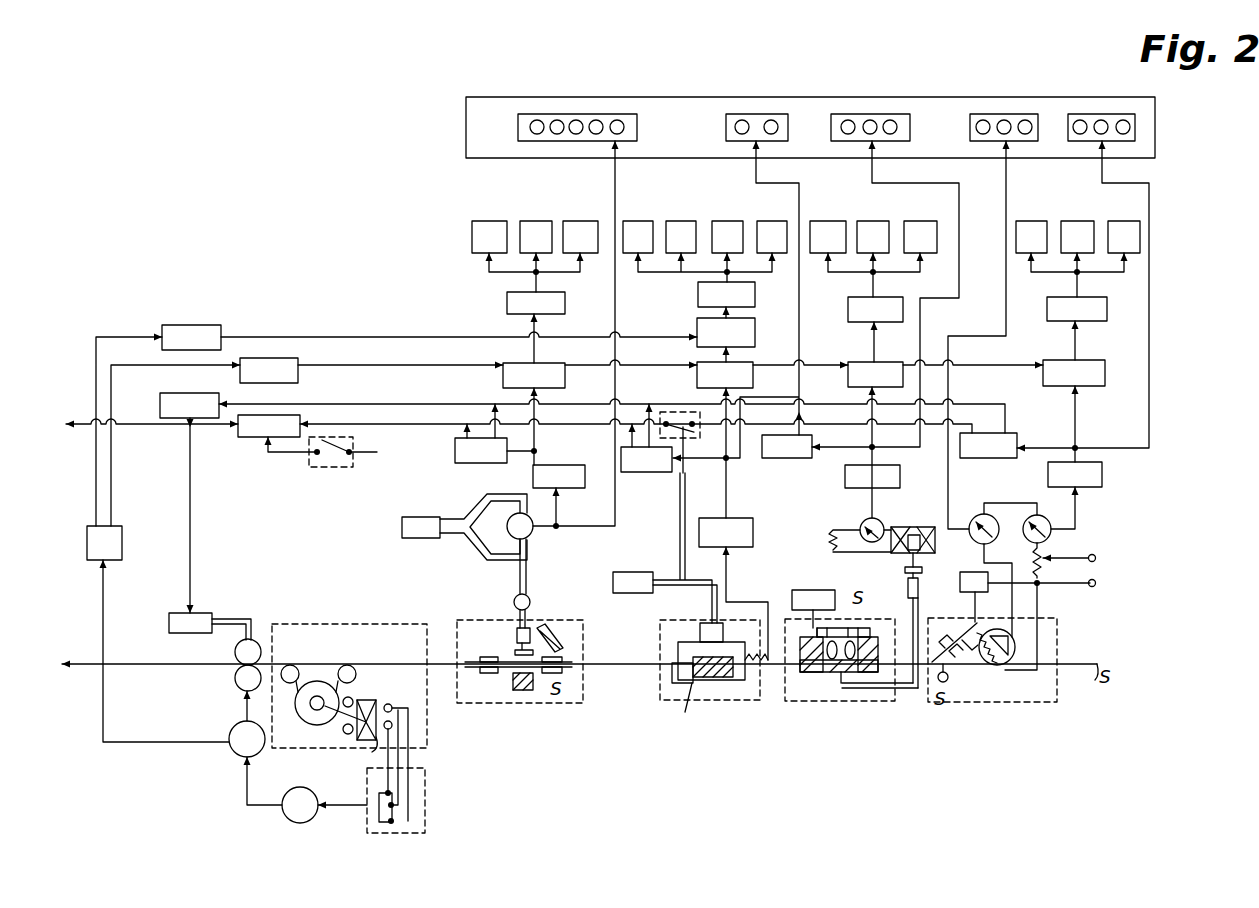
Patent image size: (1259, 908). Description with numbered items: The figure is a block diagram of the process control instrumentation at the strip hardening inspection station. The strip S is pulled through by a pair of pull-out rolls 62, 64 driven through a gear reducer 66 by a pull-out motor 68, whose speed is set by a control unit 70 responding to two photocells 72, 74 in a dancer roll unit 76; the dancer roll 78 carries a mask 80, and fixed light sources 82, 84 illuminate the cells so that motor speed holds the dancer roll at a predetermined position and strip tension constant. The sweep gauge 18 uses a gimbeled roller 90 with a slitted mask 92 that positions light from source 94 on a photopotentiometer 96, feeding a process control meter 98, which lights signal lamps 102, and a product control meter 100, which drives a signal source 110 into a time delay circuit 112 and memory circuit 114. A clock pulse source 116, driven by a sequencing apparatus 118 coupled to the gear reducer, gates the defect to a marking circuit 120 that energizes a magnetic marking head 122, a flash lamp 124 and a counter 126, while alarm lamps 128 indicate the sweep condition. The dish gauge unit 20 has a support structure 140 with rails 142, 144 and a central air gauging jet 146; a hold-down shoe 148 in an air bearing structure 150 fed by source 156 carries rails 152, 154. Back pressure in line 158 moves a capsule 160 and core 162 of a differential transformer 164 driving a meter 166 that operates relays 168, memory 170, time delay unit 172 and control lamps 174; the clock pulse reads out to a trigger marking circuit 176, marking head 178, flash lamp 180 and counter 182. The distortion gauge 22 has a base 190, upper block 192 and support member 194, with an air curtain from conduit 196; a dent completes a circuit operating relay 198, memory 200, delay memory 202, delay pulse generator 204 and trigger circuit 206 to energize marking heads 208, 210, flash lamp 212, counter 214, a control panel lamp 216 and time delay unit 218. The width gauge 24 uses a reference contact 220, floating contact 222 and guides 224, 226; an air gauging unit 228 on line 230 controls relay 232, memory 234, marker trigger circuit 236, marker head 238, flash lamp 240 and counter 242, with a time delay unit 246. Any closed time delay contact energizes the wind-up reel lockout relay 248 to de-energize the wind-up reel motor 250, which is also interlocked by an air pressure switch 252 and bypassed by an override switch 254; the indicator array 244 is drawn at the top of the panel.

The sweep gauge 18 is at (975, 706).
The dish gauge unit 20 is at (815, 702).
The distortion gauge 22 is at (700, 702).
The width gauge 24 is at (535, 702).
The pull-out roll 62 is at (235, 679).
The pull-out roll 64 is at (235, 654).
The gear reducer 66 is at (232, 748).
The pull-out motor 68 is at (306, 820).
The control unit 70 is at (425, 815).
The photocell 72 is at (391, 705).
The photocell 74 is at (374, 745).
The dancer roll unit 76 is at (384, 626).
The dancer roll 78 is at (314, 681).
The mask 80 is at (342, 722).
The light source 82 is at (352, 700).
The light source 84 is at (344, 734).
The gimbeled roller 90 is at (942, 640).
The slitted mask 92 is at (975, 664).
The light source 94 is at (945, 684).
The photopotentiometer 96 is at (1028, 665).
The process control meter 98 is at (978, 520).
The product control meter 100 is at (1045, 520).
The signal lamps 102 is at (1003, 114).
The signal source 110 is at (1102, 478).
The time delay circuit 112 is at (1017, 446).
The memory circuit 114 is at (1105, 378).
The clock pulse source 116 is at (292, 362).
The sequencing apparatus 118 is at (122, 534).
The marking circuit 120 is at (1107, 312).
The magnetic marking head 122 is at (1124, 221).
The flash lamp 124 is at (1077, 221).
The counter 126 is at (1031, 221).
The alarm lamps 128 is at (1100, 114).
The support structure 140 is at (802, 672).
The rail 142 is at (832, 660).
The rail 144 is at (852, 660).
The air gauging jet 146 is at (841, 690).
The hold-down shoe 148 is at (858, 630).
The air bearing structure 150 is at (798, 630).
The rail 152 is at (835, 628).
The rail 154 is at (860, 630).
The source 156 is at (822, 628).
The line 158 is at (918, 588).
The capsule 160 is at (905, 569).
The core 162 is at (914, 535).
The differential transformer 164 is at (900, 527).
The meter 166 is at (864, 522).
The relays 168 is at (900, 482).
The memory 170 is at (888, 365).
The time delay unit 172 is at (778, 458).
The control lamps 174 is at (866, 114).
The trigger marking circuit 176 is at (848, 308).
The magnetic marking head 178 is at (920, 221).
The flash lamp 180 is at (873, 221).
The counter 182 is at (828, 221).
The base 190 is at (672, 676).
The upper block 192 is at (678, 646).
The support member 194 is at (682, 707).
The conduit 196 is at (712, 608).
The relay 198 is at (753, 530).
The memory 200 is at (753, 378).
The delay memory 202 is at (755, 338).
The delay pulse generator 204 is at (218, 325).
The trigger circuit 206 is at (755, 302).
The marking head 208 is at (772, 221).
The marking head 210 is at (727, 221).
The flash lamp 212 is at (681, 221).
The counter 214 is at (638, 221).
The control panel lamp 216 is at (753, 114).
The time delay unit 218 is at (640, 472).
The reference contact 220 is at (518, 680).
The floating contact 222 is at (520, 660).
The guide 224 is at (556, 670).
The guide 226 is at (480, 658).
The air gauging unit 228 is at (512, 530).
The line 230 is at (527, 580).
The relay 232 is at (536, 480).
The memory 234 is at (560, 378).
The marker trigger circuit 236 is at (565, 310).
The marker head 238 is at (580, 221).
The flash lamp 240 is at (536, 221).
The counter 242 is at (489, 221).
The display 244 is at (566, 114).
The time delay unit 246 is at (455, 452).
The wind-up reel lockout relay 248 is at (160, 405).
The wind-up reel motor 250 is at (258, 437).
The air pressure switch 252 is at (698, 436).
The override switch 254 is at (366, 462).